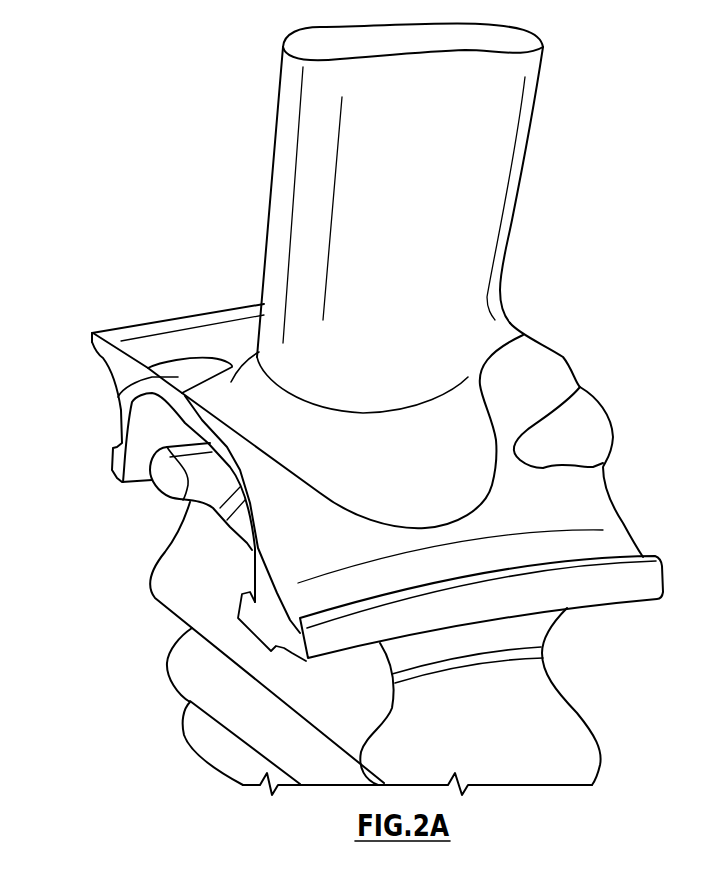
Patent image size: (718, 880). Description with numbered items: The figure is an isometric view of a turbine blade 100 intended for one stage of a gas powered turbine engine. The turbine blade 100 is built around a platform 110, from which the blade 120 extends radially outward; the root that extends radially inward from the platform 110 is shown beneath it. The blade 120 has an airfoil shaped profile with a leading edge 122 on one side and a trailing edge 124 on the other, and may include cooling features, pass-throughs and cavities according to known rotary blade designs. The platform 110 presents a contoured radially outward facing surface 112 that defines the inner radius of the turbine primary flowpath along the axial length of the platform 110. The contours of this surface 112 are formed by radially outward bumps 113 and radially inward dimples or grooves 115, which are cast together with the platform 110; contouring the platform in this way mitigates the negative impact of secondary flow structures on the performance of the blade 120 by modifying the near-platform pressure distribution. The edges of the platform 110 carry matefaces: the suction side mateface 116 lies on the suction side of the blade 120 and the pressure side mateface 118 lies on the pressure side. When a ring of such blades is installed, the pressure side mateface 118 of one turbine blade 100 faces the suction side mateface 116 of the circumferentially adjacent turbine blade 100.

The turbine blade 100 is at (160, 146).
The platform 110 is at (142, 342).
The contoured radially outward facing surface 112 is at (222, 347).
The radially outward bumps 113 is at (585, 420).
The radially inward dimples or grooves 115 is at (118, 402).
The suction side mateface 116 is at (118, 364).
The pressure side mateface 118 is at (613, 502).
The blade 120 is at (497, 128).
The leading edge 122 is at (267, 238).
The trailing edge 124 is at (507, 253).